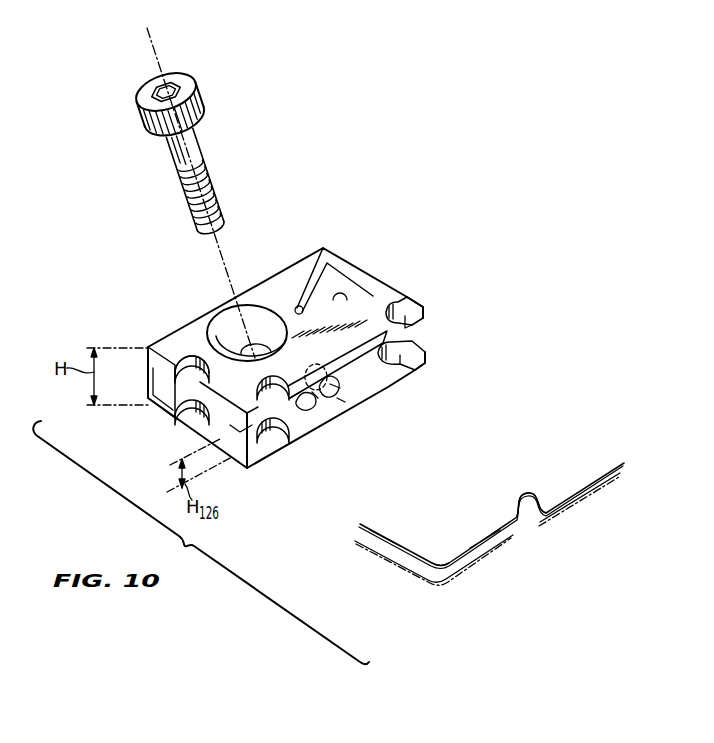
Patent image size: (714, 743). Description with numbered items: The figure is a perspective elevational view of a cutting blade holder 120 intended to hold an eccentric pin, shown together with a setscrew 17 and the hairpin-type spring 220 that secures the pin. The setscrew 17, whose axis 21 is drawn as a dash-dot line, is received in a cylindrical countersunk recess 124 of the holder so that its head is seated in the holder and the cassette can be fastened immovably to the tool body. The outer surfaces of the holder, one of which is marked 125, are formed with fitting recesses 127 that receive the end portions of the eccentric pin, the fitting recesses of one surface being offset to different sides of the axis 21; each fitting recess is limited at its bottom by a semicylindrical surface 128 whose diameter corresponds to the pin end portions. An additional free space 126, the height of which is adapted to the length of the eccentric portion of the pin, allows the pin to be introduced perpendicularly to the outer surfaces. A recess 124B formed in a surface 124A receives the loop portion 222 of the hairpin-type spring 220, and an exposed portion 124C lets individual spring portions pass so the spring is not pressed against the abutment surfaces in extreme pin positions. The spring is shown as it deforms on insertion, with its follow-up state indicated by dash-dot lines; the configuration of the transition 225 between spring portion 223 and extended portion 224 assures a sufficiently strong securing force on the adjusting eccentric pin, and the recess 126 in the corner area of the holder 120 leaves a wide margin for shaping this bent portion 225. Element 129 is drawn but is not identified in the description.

The axis 21 is at (163, 60).
The setscrew 17 is at (214, 156).
The cutting blade holder 120 is at (297, 250).
The cylindrical countersunk recess 124 is at (228, 323).
The surface 124A is at (345, 402).
The recess 124B is at (338, 388).
The exposed portion 124C is at (317, 395).
The outer surface 125 is at (148, 408).
The free space 126 is at (306, 405).
The fitting recess 127 is at (410, 372).
The semicylindrical surface 128 is at (407, 306).
The lower right tab 129 is at (426, 353).
The hairpin-type spring 220 is at (568, 468).
The loop portion 222 is at (530, 495).
The spring portion 223 is at (500, 543).
The extended portion 224 is at (387, 537).
The transition 225 is at (443, 573).